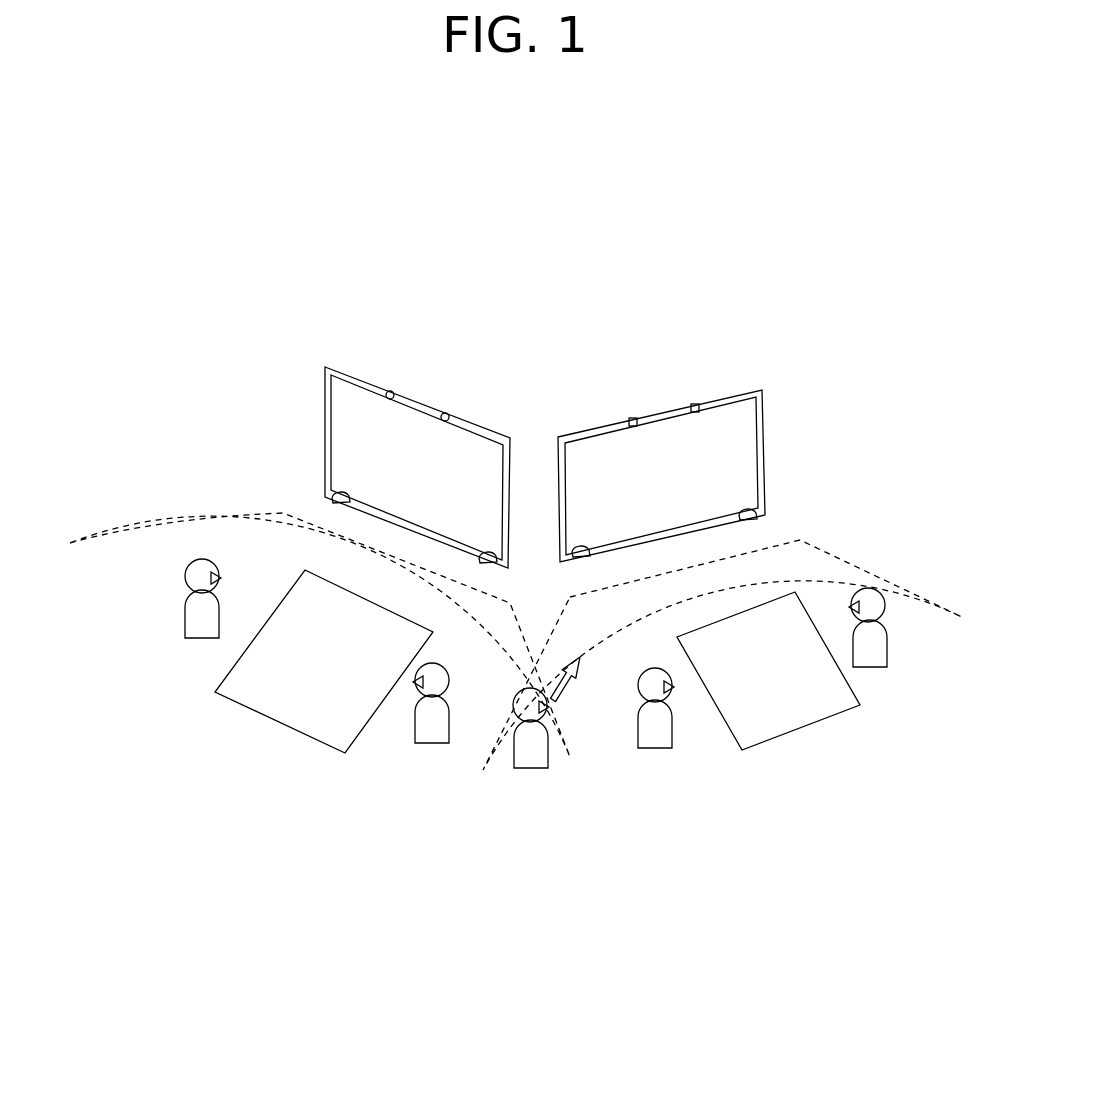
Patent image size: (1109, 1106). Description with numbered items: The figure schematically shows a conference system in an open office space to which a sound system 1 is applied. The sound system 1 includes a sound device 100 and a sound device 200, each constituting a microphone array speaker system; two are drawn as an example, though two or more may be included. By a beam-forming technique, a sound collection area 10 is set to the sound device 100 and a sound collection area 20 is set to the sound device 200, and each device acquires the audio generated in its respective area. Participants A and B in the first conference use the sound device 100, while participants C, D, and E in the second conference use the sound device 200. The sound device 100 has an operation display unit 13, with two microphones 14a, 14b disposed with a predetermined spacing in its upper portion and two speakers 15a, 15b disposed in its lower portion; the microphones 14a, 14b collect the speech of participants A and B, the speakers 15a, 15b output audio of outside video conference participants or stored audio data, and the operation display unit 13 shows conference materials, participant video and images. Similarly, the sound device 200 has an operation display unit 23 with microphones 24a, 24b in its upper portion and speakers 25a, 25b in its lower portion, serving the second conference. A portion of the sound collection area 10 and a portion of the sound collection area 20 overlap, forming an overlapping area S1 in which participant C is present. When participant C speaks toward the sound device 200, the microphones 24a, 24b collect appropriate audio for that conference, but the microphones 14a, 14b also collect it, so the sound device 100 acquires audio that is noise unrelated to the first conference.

The sound system 1 is at (800, 237).
The sound device 100 is at (463, 317).
The sound device 200 is at (658, 303).
The operation display unit 13 is at (325, 437).
The operation display unit 23 is at (768, 460).
The microphone 14a is at (391, 391).
The microphone 14b is at (448, 412).
The microphone 24a is at (634, 417).
The microphone 24b is at (697, 404).
The speaker 15a is at (340, 502).
The speaker 15b is at (488, 561).
The speaker 25a is at (582, 558).
The speaker 25b is at (754, 520).
The sound collection area 10 is at (157, 696).
The sound collection area 20 is at (890, 722).
The overlapping area S1 is at (535, 773).